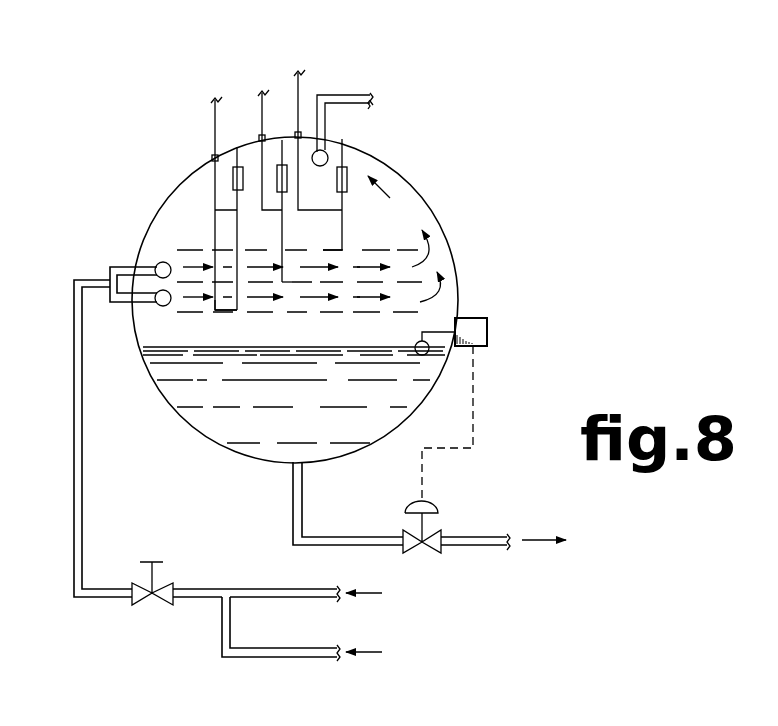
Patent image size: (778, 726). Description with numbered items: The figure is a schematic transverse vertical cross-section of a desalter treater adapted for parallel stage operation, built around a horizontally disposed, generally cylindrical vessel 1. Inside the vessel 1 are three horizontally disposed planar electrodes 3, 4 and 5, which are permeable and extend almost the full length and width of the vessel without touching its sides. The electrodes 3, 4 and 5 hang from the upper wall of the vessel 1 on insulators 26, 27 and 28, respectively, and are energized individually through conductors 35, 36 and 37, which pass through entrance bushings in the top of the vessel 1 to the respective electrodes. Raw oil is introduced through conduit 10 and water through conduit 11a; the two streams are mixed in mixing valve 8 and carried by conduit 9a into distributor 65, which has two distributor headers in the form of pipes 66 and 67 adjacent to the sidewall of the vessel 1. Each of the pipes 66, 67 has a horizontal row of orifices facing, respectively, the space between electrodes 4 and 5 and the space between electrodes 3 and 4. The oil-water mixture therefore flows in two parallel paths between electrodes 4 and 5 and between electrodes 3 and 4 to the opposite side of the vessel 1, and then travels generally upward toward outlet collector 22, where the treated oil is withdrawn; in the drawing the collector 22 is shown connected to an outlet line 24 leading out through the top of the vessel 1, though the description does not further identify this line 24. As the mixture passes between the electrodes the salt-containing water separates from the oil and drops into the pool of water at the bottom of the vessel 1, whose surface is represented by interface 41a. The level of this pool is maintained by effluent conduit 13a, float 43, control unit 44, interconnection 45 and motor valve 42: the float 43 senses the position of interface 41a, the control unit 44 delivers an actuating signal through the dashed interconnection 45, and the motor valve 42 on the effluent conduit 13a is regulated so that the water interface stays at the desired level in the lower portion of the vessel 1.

The vessel 1 is at (180, 184).
The electrode 3 is at (219, 248).
The electrode 4 is at (224, 282).
The electrode 5 is at (262, 312).
The mixing valve 8 is at (165, 598).
The conduit 9a is at (74, 470).
The conduit 10 is at (203, 589).
The conduit 11a is at (255, 648).
The effluent conduit 13a is at (357, 537).
The outlet collector 22 is at (328, 152).
The gas pipe 24 is at (333, 95).
The insulator 26 is at (355, 150).
The insulator 27 is at (287, 192).
The insulator 28 is at (243, 192).
The conductor 35 is at (296, 95).
The conductor 36 is at (260, 110).
The conductor 37 is at (213, 130).
The interface 41a is at (300, 347).
The motor valve 42 is at (432, 537).
The float 43 is at (422, 355).
The control unit 44 is at (482, 326).
The interconnection 45 is at (476, 410).
The distributor 65 is at (131, 267).
The pipe 66 is at (160, 306).
The pipe 67 is at (163, 262).